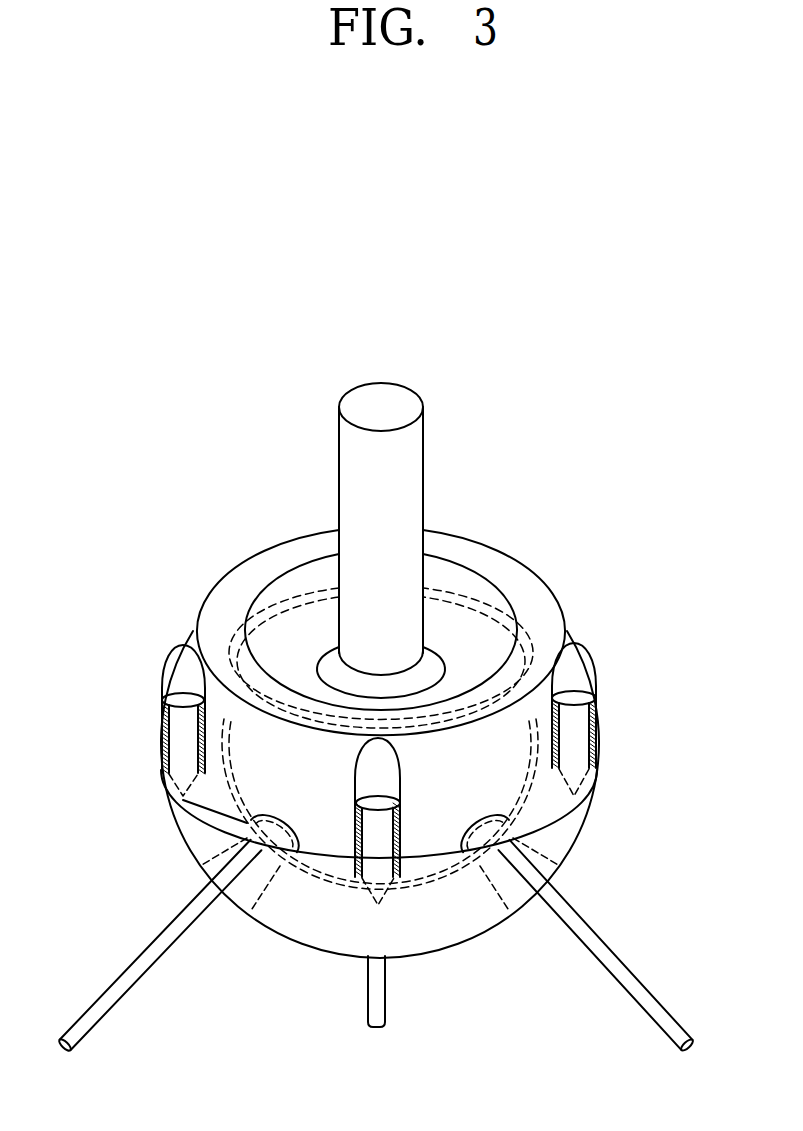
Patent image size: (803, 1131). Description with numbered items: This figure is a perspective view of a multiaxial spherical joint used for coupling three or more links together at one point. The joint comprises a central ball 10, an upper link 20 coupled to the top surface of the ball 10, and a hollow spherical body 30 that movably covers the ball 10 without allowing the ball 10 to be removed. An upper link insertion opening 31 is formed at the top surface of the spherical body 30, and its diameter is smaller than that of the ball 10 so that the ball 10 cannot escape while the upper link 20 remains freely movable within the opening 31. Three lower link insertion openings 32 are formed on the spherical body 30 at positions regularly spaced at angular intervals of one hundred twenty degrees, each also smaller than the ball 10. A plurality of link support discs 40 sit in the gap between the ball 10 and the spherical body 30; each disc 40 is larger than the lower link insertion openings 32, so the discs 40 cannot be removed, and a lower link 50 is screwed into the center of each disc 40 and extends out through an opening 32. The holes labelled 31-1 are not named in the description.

The central ball 10 is at (348, 687).
The upper link 20 is at (395, 467).
The hollow spherical body 30 is at (226, 617).
The upper link insertion opening 31 is at (460, 590).
The holes 31-1 is at (575, 697).
The lower link insertion openings 32 is at (548, 873).
The link support discs 40 is at (183, 800).
The lower links 50 is at (177, 935).